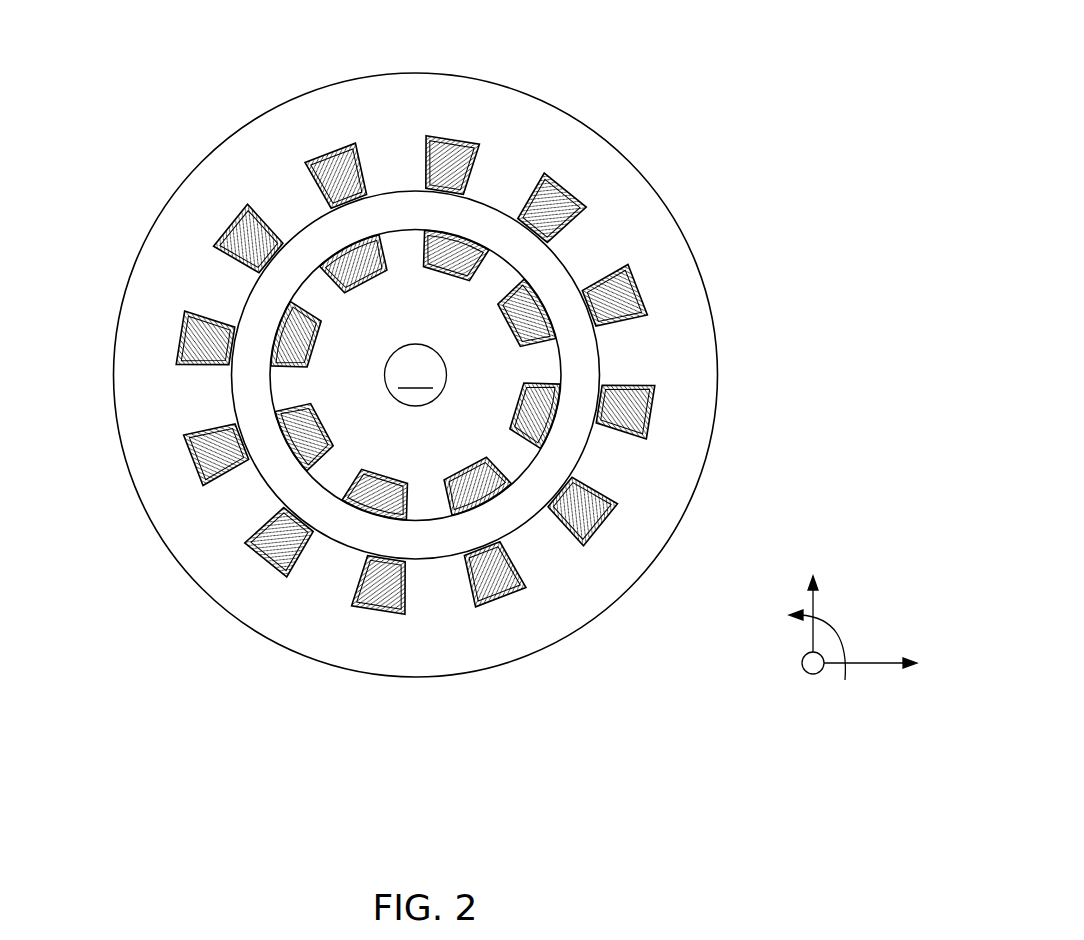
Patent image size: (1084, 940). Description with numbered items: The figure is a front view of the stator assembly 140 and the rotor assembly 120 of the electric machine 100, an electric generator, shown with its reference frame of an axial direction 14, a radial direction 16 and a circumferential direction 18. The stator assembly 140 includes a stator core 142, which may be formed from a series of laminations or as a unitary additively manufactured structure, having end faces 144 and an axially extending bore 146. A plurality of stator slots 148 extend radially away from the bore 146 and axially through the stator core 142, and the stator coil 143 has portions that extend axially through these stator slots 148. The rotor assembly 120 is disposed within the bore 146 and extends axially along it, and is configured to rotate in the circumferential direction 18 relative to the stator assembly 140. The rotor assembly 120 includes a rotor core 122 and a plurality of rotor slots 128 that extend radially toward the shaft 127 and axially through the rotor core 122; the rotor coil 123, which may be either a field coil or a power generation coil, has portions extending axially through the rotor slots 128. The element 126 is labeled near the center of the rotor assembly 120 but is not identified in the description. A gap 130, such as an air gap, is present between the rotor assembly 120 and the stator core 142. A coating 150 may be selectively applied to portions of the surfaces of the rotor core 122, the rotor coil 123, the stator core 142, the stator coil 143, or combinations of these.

The electric machine 100 is at (158, 72).
The rotor assembly 120 is at (266, 390).
The rotor core 122 is at (273, 483).
The rotor coil 123 is at (453, 520).
The shaft bore 126 is at (388, 357).
The shaft 127 is at (416, 375).
The rotor slots 128 is at (500, 498).
The gap 130 is at (568, 432).
The stator assembly 140 is at (287, 103).
The stator core 142 is at (625, 156).
The stator coil 143 is at (587, 212).
The end faces 144 is at (683, 318).
The bore 146 is at (397, 185).
The stator slots 148 is at (463, 140).
The coating 150 is at (267, 188).
The axial direction 14 is at (813, 682).
The radial direction 16 is at (818, 585).
The circumferential direction 18 is at (838, 632).